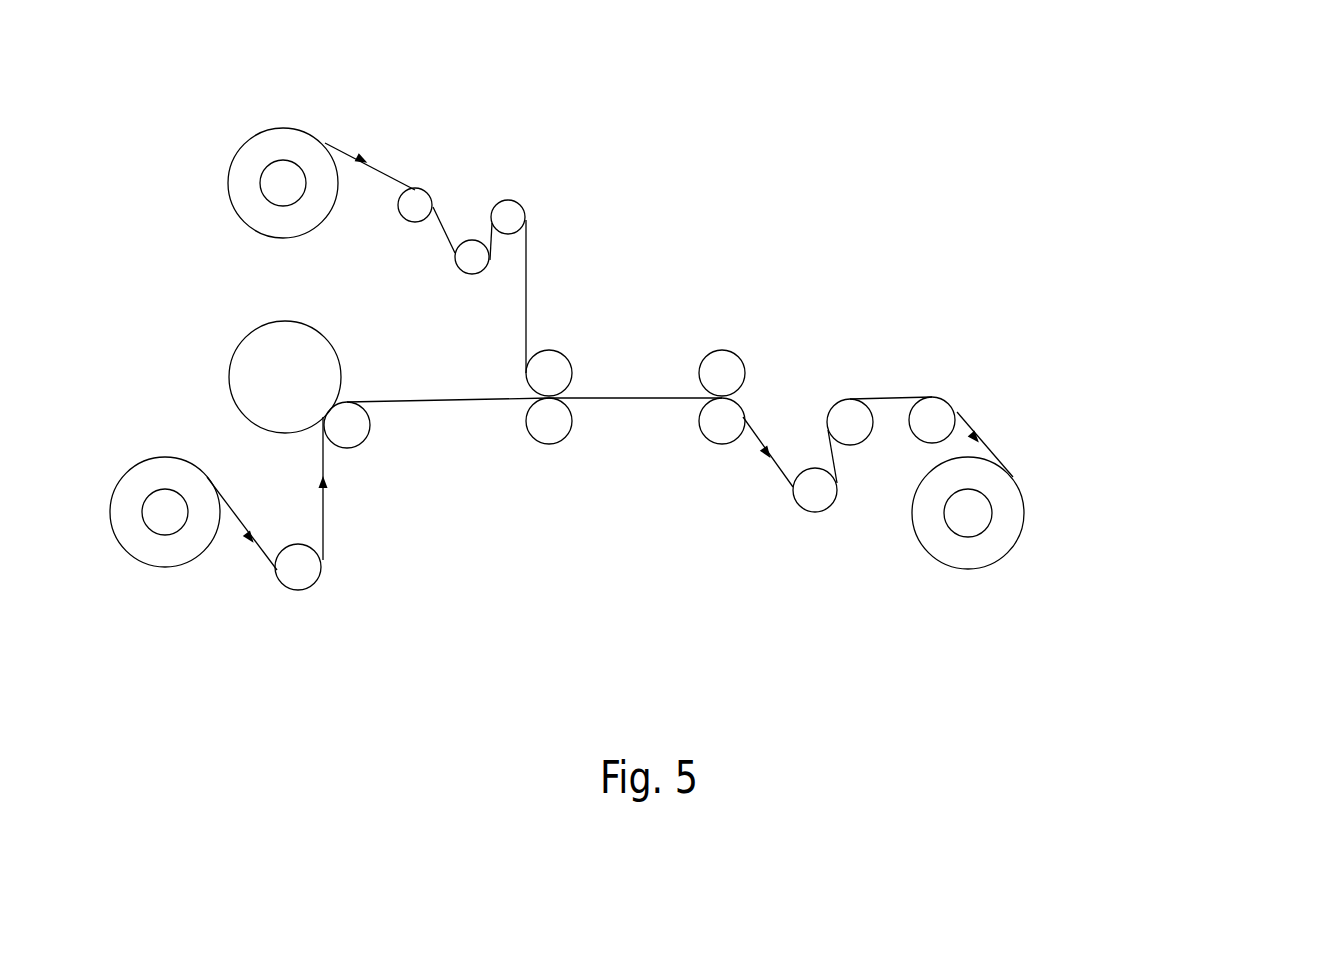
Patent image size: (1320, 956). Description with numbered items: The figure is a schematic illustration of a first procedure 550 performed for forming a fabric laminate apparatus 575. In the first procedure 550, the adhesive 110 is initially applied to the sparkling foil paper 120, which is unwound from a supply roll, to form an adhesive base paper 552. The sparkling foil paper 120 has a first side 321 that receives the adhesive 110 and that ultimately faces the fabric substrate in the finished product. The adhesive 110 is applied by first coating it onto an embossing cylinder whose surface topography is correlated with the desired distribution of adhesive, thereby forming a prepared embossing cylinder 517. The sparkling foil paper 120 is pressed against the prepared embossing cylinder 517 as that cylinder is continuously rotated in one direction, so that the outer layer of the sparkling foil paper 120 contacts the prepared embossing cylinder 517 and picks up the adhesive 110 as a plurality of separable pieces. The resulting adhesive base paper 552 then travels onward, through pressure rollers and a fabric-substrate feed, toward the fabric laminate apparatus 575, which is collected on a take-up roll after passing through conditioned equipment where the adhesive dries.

The first procedure 550 is at (103, 86).
The adhesive material 110 is at (235, 346).
The prepared embossing cylinder 517 is at (285, 377).
The first side 321 is at (323, 459).
The sparkling foil paper 120 is at (260, 553).
The adhesive base paper 552 is at (453, 402).
The fabric laminate apparatus 575 is at (648, 402).